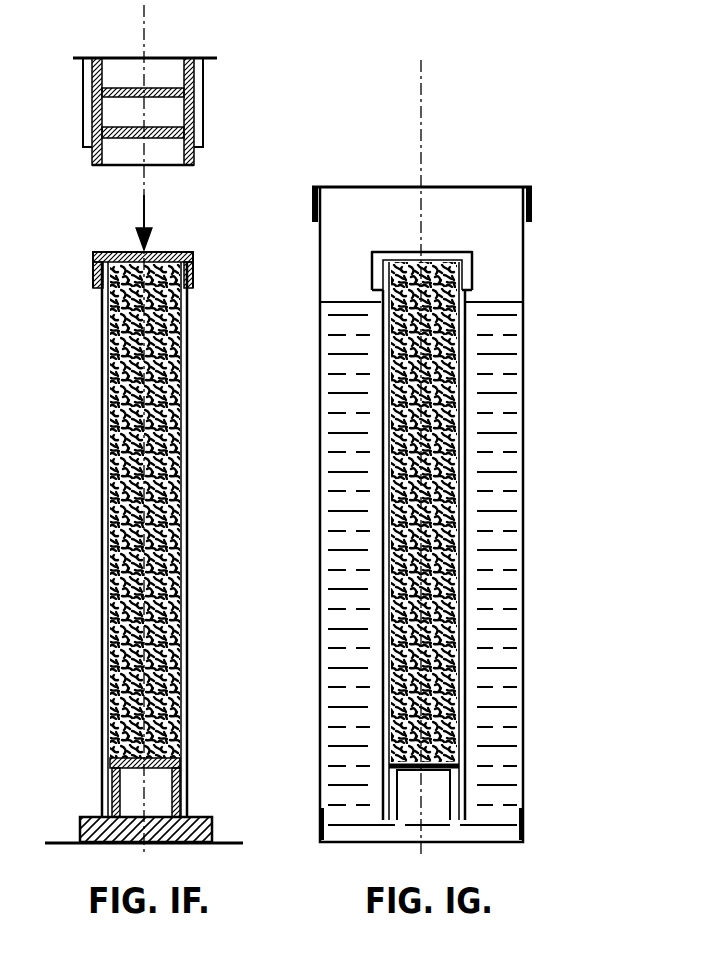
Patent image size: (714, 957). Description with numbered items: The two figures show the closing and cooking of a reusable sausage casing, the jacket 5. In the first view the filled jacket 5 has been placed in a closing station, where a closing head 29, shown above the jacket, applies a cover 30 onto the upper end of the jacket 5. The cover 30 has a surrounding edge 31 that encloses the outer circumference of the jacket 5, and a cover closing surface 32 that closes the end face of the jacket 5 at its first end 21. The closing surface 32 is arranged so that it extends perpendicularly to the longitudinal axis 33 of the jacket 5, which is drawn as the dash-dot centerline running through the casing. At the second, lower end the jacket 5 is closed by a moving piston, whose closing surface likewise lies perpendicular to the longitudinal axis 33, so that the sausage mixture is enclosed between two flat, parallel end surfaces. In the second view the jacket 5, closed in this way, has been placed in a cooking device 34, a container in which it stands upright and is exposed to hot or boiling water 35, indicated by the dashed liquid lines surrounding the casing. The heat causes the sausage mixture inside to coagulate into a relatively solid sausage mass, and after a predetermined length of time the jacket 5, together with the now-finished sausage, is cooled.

In FIG. 1F, the jacket 5 is at (104, 420).
In FIG. 1F, the first end 21 is at (200, 277).
In FIG. 1F, the closing head 29 is at (215, 94).
In FIG. 1F, the cover 30 is at (125, 256).
In FIG. 1F, the surrounding edge 31 is at (98, 275).
In FIG. 1F, the cover closing surface 32 is at (110, 300).
In FIG. 1F, the longitudinal axis 33 is at (95, 380).
In FIG. 1G, the cooking device 34 is at (538, 456).
In FIG. 1G, the hot or boiling water 35 is at (512, 546).